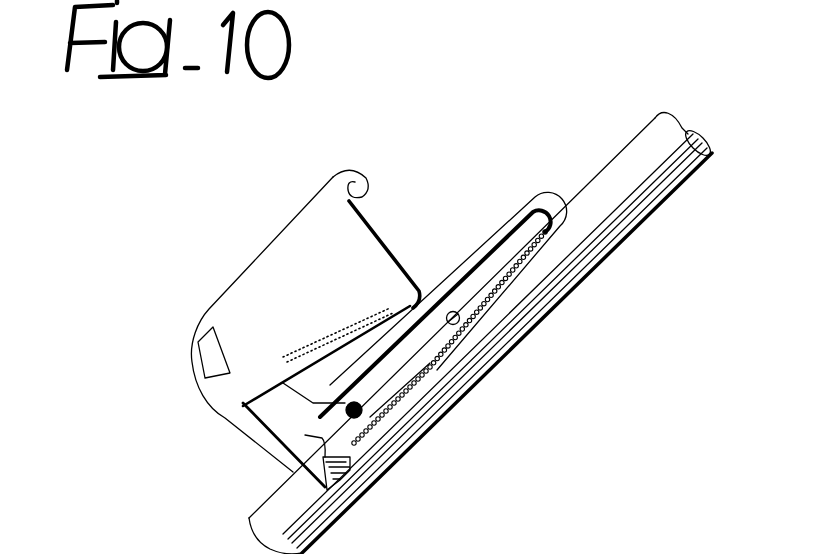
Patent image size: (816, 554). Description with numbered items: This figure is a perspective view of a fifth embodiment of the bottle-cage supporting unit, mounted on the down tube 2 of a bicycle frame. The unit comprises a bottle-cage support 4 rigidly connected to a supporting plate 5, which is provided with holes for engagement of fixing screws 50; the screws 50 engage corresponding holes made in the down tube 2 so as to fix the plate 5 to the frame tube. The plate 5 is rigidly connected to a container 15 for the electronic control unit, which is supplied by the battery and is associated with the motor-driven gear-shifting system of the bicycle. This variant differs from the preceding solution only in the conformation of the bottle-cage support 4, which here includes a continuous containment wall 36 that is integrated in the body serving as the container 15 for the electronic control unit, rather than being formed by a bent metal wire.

The down tube 2 is at (585, 237).
The bottle-cage support 4 is at (305, 185).
The supporting plate 5 is at (440, 390).
The container 15 is at (333, 517).
The continuous containment wall 36 is at (280, 278).
The fixing screws 50 is at (452, 313).